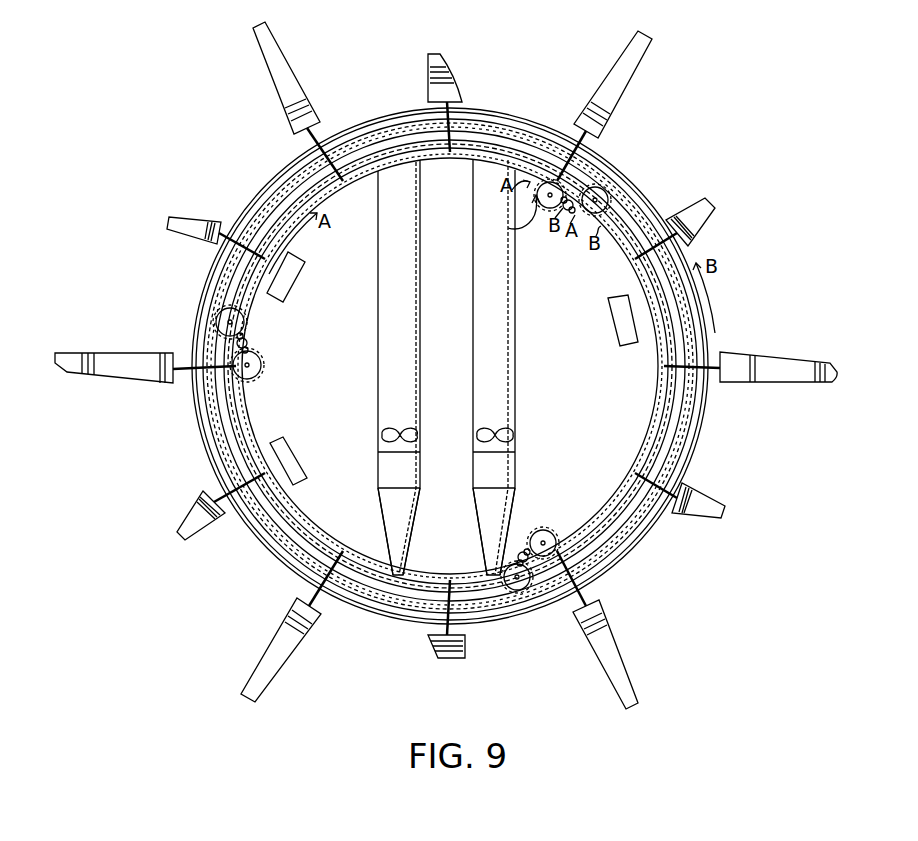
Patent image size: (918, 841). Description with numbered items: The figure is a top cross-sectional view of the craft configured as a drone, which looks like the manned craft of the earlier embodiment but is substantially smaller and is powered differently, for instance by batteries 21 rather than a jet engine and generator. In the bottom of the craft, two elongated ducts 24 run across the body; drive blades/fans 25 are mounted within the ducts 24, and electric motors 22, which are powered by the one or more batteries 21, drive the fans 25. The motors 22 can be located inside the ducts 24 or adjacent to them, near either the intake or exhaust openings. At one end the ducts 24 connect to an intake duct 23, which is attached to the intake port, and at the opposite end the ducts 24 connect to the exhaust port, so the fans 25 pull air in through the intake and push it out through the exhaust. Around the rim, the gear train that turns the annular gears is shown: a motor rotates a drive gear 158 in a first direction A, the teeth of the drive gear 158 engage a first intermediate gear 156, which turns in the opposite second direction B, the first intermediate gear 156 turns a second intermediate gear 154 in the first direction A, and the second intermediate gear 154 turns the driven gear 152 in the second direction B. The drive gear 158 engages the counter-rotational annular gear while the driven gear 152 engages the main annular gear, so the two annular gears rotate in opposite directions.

The batteries 21 is at (620, 322).
The electric motors 22 is at (483, 468).
The intake duct 23 is at (485, 518).
The ducts 24 is at (472, 321).
The drive blades/fans 25 is at (508, 430).
The driven gear 152 is at (604, 196).
The second intermediate gear 154 is at (576, 200).
The first intermediate gear 156 is at (567, 195).
The drive gear 158 is at (516, 226).